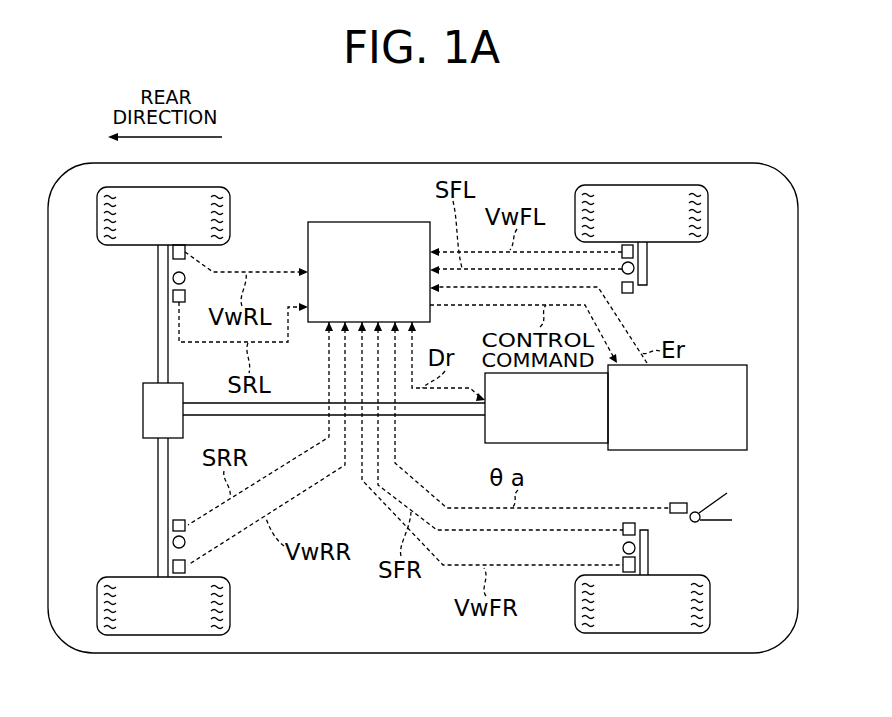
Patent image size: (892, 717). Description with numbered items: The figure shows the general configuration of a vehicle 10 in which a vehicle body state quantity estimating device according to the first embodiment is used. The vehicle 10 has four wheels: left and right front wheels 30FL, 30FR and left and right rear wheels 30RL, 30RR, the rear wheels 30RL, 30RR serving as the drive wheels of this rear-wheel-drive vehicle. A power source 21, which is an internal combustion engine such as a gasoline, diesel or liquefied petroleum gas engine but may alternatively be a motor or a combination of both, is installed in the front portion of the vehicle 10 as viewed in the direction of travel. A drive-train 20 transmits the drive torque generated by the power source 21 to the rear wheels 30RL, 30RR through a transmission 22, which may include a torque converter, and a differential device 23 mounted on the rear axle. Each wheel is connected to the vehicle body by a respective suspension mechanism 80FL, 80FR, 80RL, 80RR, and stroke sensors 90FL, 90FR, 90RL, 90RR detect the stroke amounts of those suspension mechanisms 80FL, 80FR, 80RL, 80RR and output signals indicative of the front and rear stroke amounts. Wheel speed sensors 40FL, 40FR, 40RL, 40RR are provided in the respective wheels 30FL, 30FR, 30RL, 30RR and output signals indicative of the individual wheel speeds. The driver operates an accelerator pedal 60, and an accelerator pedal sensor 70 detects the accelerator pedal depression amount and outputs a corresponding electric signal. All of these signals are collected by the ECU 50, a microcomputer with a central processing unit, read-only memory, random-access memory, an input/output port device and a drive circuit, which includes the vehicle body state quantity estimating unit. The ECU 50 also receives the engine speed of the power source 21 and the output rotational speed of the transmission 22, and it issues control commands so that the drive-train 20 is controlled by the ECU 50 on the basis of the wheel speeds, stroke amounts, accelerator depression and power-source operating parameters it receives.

The vehicle 10 is at (620, 140).
The drive-train 20 is at (741, 348).
The power source 21 is at (664, 421).
The transmission 22 is at (534, 421).
The differential device 23 is at (150, 423).
The rear left wheel 30RL is at (163, 216).
The front left wheel 30FL is at (641, 213).
The rear right wheel 30RR is at (163, 606).
The front right wheel 30FR is at (642, 604).
The rear left wheel speed sensor 40RL is at (188, 251).
The front left wheel speed sensor 40FL is at (622, 248).
The rear right wheel speed sensor 40RR is at (188, 566).
The front right wheel speed sensor 40FR is at (575, 578).
The ECU 50 is at (356, 285).
The accelerator pedal 60 is at (733, 514).
The accelerator pedal sensor 70 is at (675, 503).
The rear left suspension mechanism 80RL is at (173, 280).
The front left suspension mechanism 80FL is at (634, 269).
The rear right suspension mechanism 80RR is at (173, 542).
The front right suspension mechanism 80FR is at (623, 548).
The rear left stroke sensor 90RL is at (173, 298).
The front left stroke sensor 90FL is at (634, 289).
The rear right stroke sensor 90RR is at (173, 523).
The front right stroke sensor 90FR is at (623, 528).